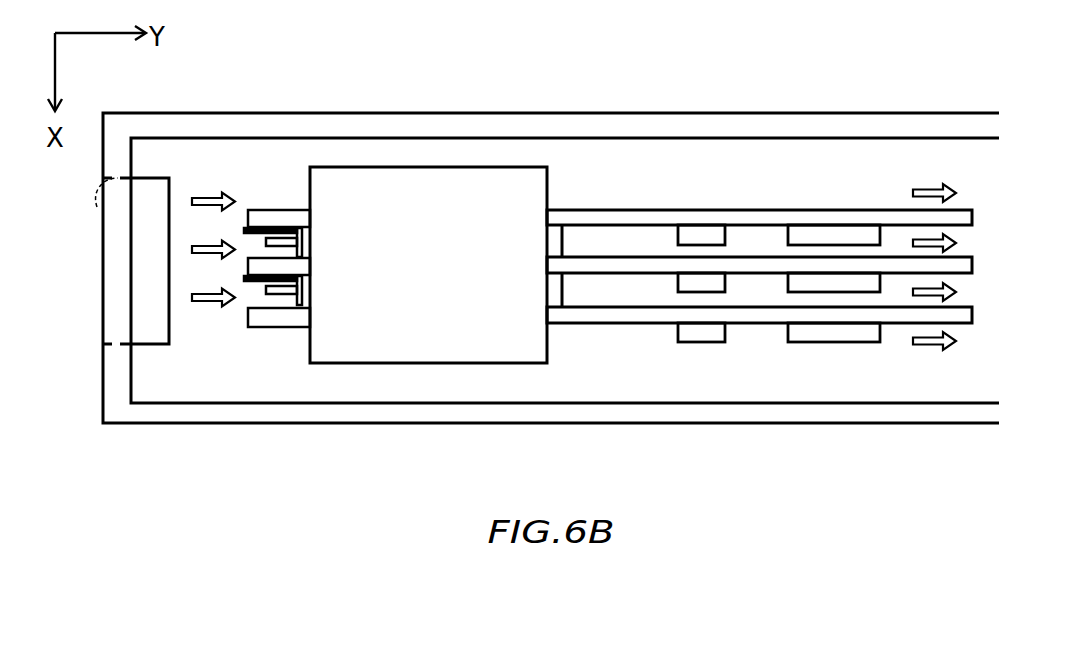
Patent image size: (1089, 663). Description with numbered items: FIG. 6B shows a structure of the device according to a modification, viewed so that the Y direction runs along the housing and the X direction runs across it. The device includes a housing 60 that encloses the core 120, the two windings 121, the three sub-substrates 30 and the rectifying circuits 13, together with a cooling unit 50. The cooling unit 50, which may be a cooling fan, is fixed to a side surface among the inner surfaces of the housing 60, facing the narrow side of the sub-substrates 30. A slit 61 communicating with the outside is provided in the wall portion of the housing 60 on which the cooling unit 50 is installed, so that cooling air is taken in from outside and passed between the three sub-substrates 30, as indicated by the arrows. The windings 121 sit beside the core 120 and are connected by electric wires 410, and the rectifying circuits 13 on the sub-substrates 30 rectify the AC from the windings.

The housing 60 is at (463, 112).
The slit 61 is at (98, 200).
The cooling unit 50 is at (169, 327).
The electric wires 410 is at (290, 297).
The core 120 is at (547, 172).
The windings 121 is at (562, 241).
The rectifying circuits 13 is at (675, 347).
The sub-substrates 30 is at (980, 204).